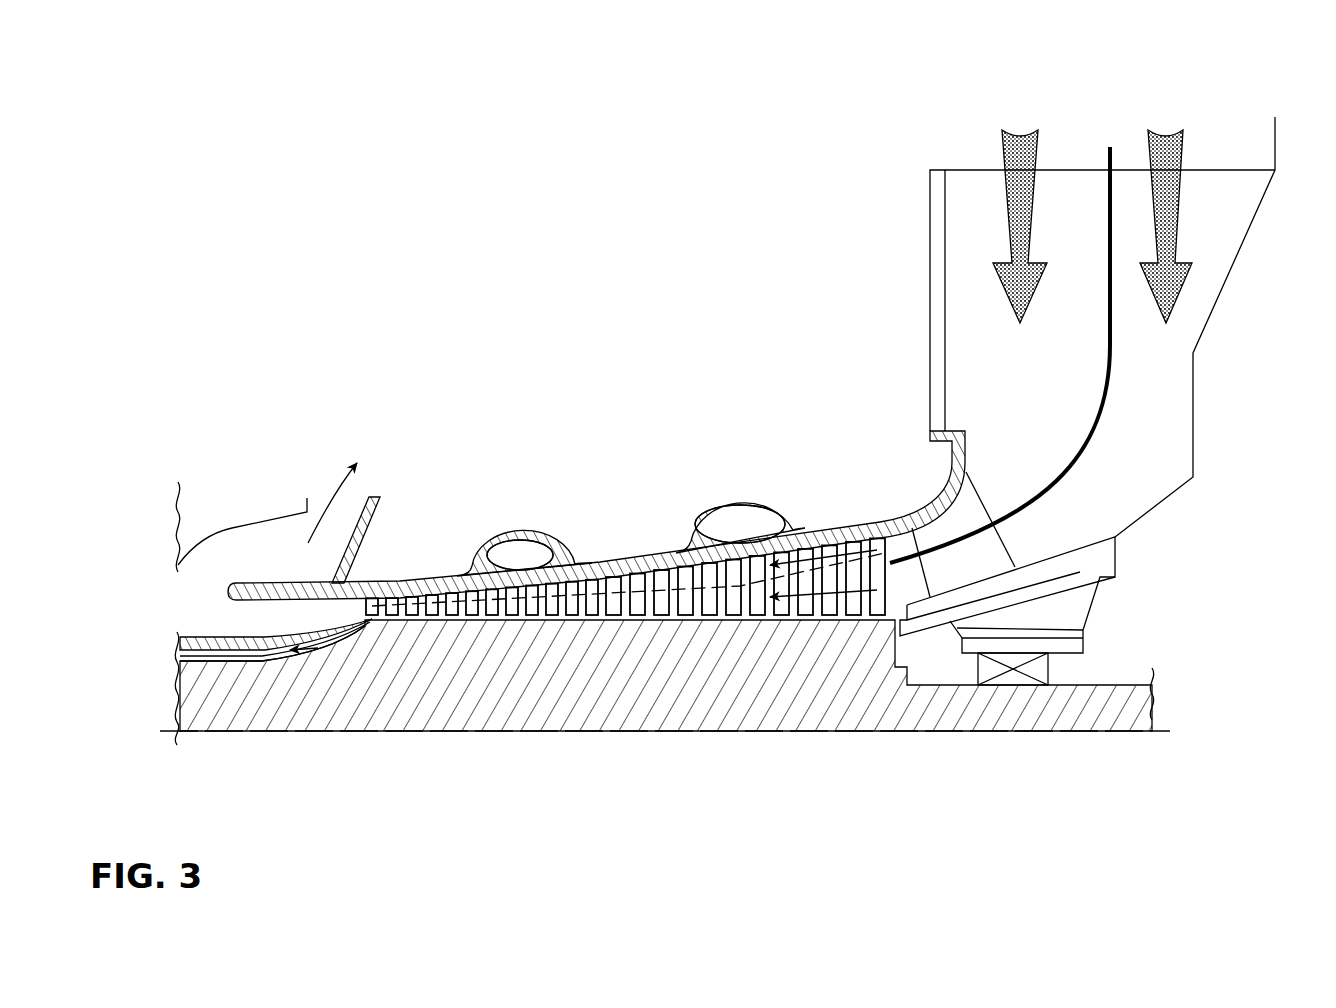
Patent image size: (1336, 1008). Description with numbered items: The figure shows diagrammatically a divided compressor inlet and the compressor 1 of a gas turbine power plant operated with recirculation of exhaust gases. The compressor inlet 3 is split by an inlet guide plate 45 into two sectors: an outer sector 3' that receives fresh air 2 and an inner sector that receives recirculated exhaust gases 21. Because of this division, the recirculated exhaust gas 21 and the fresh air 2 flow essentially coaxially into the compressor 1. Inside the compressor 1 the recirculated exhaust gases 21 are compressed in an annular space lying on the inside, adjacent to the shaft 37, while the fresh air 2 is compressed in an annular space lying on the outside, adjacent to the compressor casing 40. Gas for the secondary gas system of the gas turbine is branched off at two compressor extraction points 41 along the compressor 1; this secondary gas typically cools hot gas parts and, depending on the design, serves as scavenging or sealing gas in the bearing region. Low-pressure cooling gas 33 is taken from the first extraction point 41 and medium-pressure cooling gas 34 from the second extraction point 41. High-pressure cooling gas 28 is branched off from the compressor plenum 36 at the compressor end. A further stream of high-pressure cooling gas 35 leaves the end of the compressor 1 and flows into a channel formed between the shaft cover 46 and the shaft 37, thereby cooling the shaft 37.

The compressor 1 is at (607, 290).
The fresh air 2 is at (797, 558).
The compressor inlet 3 is at (1098, 427).
The outer sector 3' is at (920, 300).
The recirculated exhaust gases 21 is at (845, 588).
The high-pressure cooling gas 28 is at (344, 501).
The low-pressure cooling gas 33 is at (723, 527).
The medium-pressure cooling gas 34 is at (505, 556).
The high-pressure cooling gas 35 is at (308, 653).
The compressor plenum 36 is at (284, 567).
The shaft 37 is at (675, 681).
The compressor casing 40 is at (843, 533).
The compressor extraction points 41 is at (530, 550).
The inlet guide plate 45 is at (1110, 147).
The shaft cover 46 is at (213, 646).